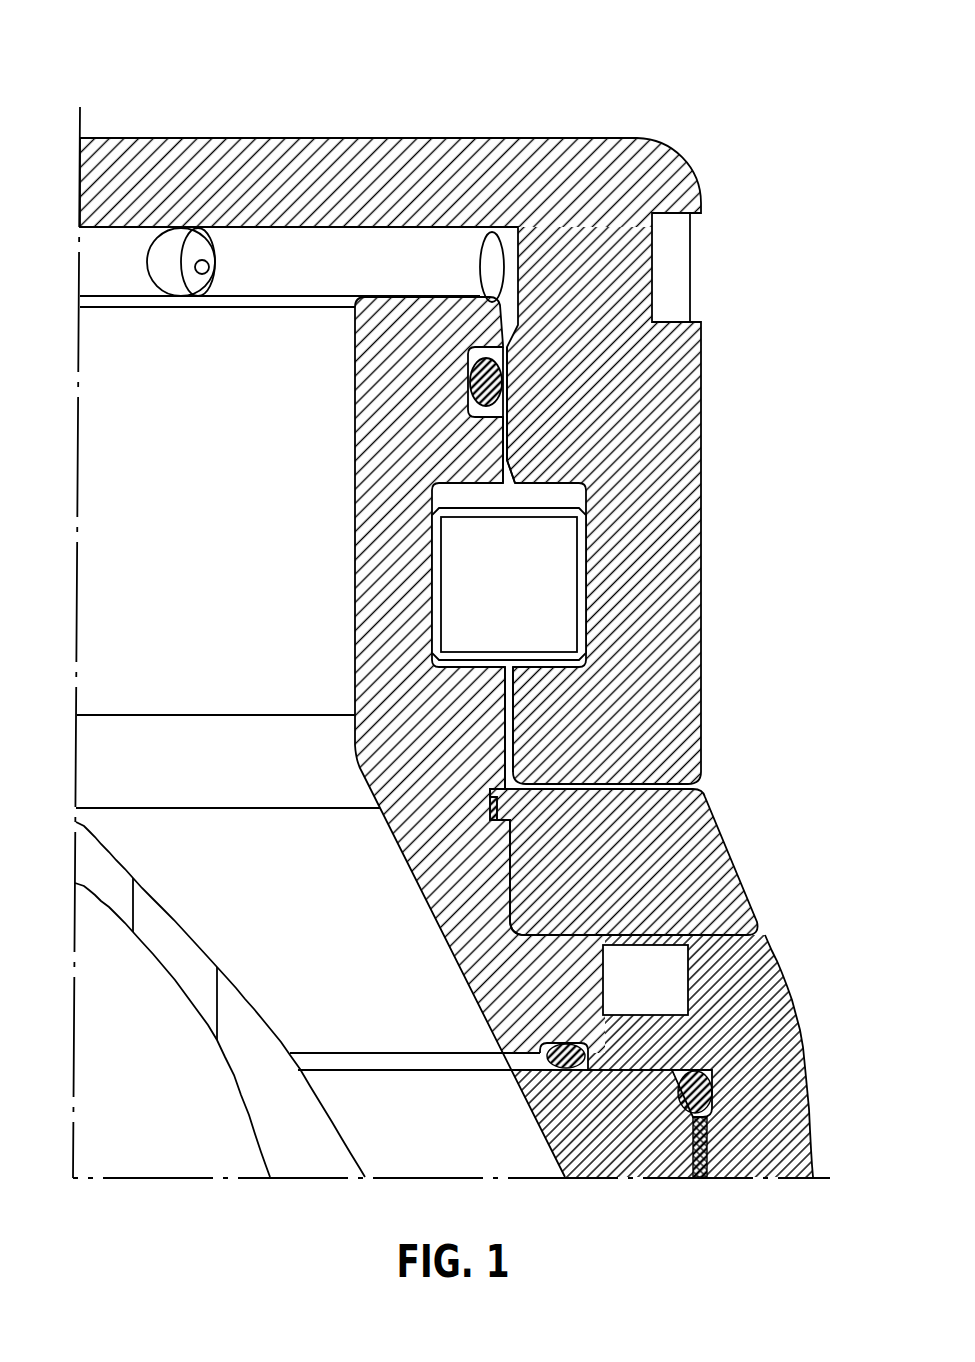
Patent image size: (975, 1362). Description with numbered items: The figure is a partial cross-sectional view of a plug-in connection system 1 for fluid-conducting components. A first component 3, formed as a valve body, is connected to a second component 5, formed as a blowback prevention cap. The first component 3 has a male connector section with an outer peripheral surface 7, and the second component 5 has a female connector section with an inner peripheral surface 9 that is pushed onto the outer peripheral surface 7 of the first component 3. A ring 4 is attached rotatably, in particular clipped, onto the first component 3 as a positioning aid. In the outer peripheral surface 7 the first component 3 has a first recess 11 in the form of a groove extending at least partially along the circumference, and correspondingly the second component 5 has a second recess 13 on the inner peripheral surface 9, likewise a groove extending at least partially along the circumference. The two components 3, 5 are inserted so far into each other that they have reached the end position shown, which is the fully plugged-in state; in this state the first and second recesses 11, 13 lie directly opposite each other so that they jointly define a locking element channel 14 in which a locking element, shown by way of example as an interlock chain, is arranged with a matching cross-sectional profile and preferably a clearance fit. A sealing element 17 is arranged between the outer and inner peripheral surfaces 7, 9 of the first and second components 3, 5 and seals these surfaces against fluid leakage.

The plug-in connection system 1 is at (163, 118).
The first component 3 is at (782, 1033).
The ring 4 is at (708, 893).
The second component 5 is at (535, 168).
The outer peripheral surface 7 is at (507, 740).
The inner peripheral surface 9 is at (527, 710).
The first recess 11 is at (430, 580).
The second recess 13 is at (588, 580).
The locking element channel 14 is at (520, 482).
The sealing element 17 is at (493, 380).